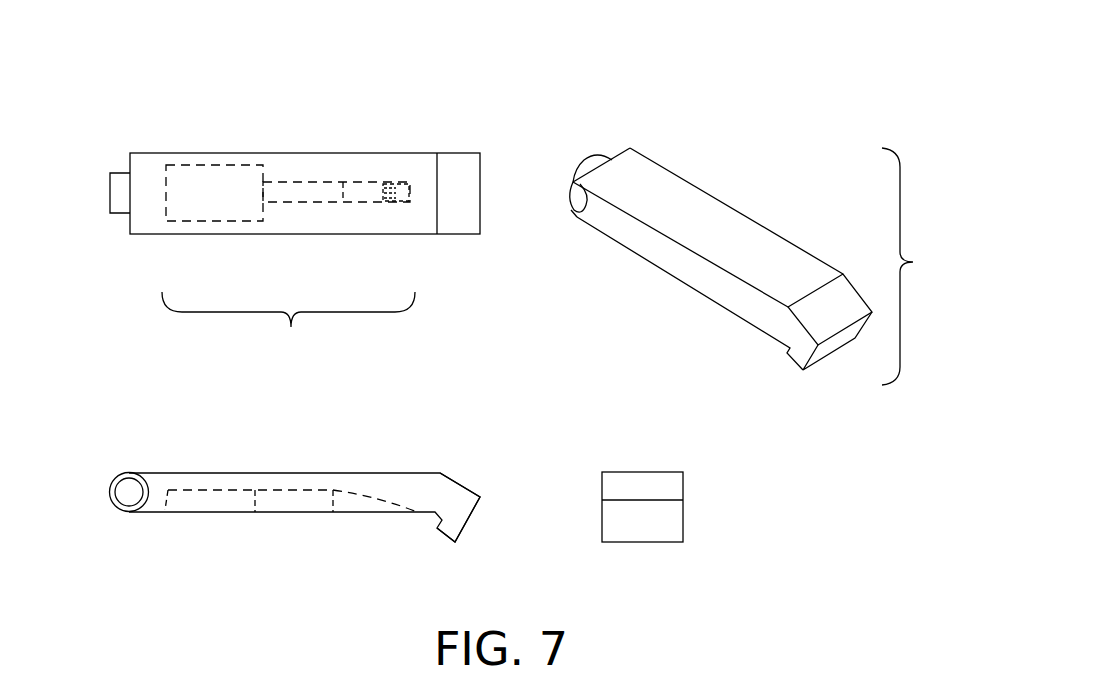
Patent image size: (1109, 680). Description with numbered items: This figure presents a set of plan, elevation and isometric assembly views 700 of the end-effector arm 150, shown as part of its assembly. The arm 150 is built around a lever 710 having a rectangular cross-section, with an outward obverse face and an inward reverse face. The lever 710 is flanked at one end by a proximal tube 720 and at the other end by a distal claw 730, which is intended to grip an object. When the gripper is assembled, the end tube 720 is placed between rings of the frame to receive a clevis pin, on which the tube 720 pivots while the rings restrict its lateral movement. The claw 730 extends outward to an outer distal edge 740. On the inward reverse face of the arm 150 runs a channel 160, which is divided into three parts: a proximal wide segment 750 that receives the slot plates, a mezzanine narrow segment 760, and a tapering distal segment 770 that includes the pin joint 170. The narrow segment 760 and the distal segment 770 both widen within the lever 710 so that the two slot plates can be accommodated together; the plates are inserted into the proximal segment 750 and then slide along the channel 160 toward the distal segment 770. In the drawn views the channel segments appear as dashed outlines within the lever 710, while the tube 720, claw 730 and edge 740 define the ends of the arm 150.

The assembly views 700 is at (150, 67).
The lever 710 is at (280, 234).
The proximal tube 720 is at (120, 213).
The distal claw 730 is at (453, 152).
The outer distal edge 740 is at (482, 495).
The proximal wide segment 750 is at (208, 157).
The mezzanine narrow segment 760 is at (298, 178).
The tapering distal segment 770 is at (347, 203).
The channel 160 is at (277, 490).
The pin joint 170 is at (353, 518).
The end-effector arm 150 is at (921, 266).